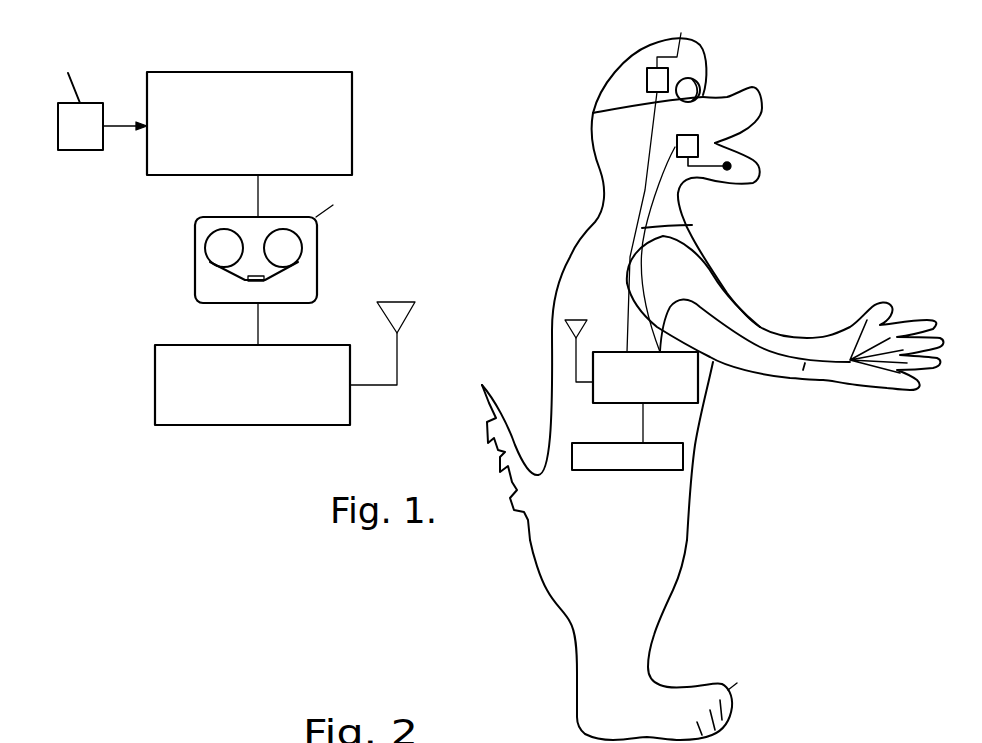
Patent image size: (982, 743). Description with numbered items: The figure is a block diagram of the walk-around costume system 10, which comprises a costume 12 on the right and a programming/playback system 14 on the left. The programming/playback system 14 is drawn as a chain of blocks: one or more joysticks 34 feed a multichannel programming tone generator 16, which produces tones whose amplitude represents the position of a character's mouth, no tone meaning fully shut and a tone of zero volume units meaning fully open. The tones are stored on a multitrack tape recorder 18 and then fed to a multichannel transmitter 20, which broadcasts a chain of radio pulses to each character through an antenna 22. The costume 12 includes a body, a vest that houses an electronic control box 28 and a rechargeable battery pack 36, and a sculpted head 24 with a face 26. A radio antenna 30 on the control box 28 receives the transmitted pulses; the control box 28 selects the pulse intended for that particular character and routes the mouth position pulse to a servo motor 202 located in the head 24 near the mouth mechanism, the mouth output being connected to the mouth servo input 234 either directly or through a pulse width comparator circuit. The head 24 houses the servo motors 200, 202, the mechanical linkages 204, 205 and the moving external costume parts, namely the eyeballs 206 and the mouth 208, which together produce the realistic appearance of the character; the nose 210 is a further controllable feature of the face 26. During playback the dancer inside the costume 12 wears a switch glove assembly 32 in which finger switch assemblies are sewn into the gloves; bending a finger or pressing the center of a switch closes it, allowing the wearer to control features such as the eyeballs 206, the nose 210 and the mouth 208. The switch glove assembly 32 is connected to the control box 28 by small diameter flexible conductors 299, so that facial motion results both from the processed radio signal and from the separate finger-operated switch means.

The walk-around costume system 10 is at (485, 67).
The costume 12 is at (708, 578).
The programming/playback system 14 is at (323, 51).
The multichannel programming tone generator 16 is at (352, 72).
The multitrack tape recorder 18 is at (196, 222).
The multichannel transmitter 20 is at (155, 345).
The antenna 22 is at (380, 302).
The sculpted head 24 is at (631, 62).
The face 26 is at (782, 48).
The control box 28 is at (700, 399).
The radio antenna 30 is at (570, 334).
The switch glove assembly 32 is at (863, 309).
The joystick 34 is at (103, 103).
The rechargeable battery pack 36 is at (690, 472).
The servo motor 200 is at (593, 113).
The servo motor 202 is at (698, 137).
The mechanical linkage 204 is at (661, 181).
The mechanical linkage 205 is at (711, 176).
The eyeballs 206 is at (702, 83).
The mouth 208 is at (752, 145).
The nose 210 is at (752, 100).
The mouth servo input 234 is at (697, 230).
The flexible conductors 299 is at (805, 363).